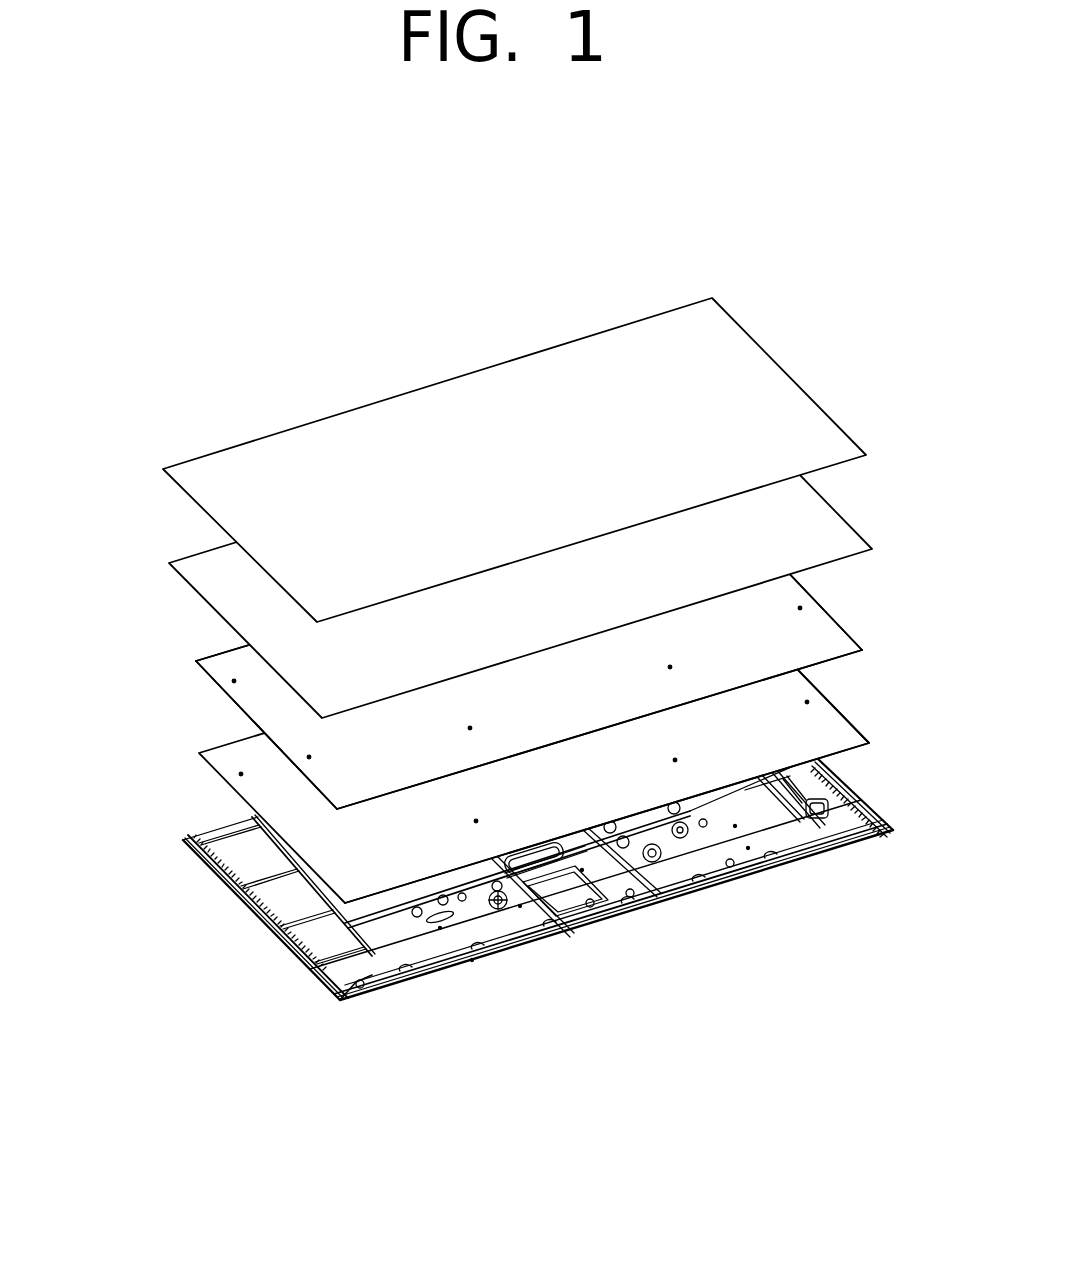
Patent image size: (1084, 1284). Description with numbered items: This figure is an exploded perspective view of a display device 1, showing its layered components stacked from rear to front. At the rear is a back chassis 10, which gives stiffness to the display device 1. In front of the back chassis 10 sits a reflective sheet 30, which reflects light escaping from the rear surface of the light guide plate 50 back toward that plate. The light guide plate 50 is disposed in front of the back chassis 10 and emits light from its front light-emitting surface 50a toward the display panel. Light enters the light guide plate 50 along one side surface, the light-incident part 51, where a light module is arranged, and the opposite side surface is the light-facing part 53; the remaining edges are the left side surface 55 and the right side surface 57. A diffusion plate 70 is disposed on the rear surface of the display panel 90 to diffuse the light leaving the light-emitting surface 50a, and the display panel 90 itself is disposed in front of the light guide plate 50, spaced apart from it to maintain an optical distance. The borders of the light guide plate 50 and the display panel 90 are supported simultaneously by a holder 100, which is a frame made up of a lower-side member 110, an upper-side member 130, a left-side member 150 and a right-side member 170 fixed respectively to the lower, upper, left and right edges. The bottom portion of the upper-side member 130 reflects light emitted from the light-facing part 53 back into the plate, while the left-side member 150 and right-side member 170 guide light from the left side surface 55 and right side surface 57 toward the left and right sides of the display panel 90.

The display device 1 is at (527, 250).
The back chassis 10 is at (763, 812).
The reflective sheet 30 is at (227, 755).
The light guide plate 50 is at (176, 668).
The light-emitting surface 50a is at (820, 640).
The light-incident part 51 is at (763, 682).
The light-facing part 53 is at (224, 650).
The left side surface 55 is at (220, 690).
The right side surface 57 is at (827, 612).
The diffusion plate 70 is at (212, 563).
The display panel 90 is at (260, 455).
The holder 100 is at (637, 1038).
The lower-side member 110 is at (435, 958).
The upper-side member 130 is at (232, 832).
The left-side member 150 is at (360, 976).
The right-side member 170 is at (868, 808).